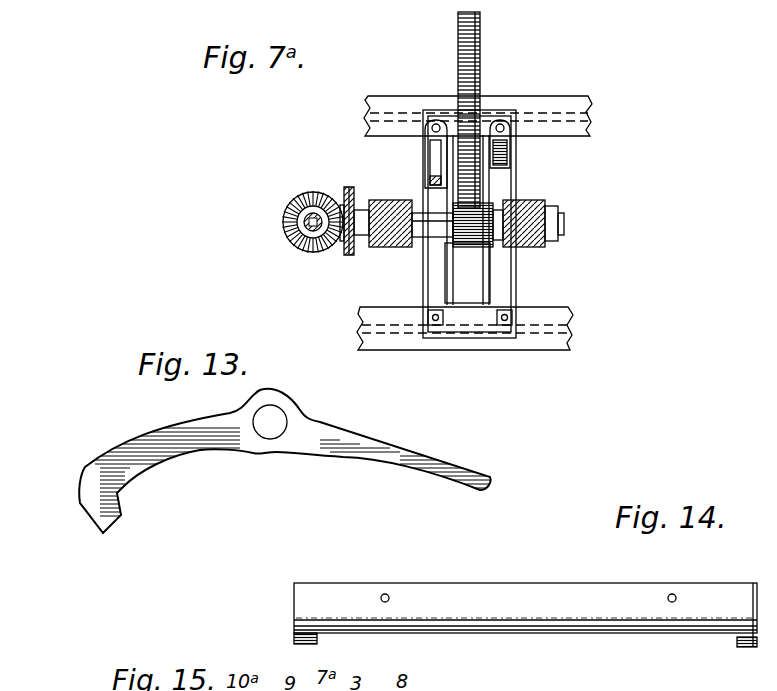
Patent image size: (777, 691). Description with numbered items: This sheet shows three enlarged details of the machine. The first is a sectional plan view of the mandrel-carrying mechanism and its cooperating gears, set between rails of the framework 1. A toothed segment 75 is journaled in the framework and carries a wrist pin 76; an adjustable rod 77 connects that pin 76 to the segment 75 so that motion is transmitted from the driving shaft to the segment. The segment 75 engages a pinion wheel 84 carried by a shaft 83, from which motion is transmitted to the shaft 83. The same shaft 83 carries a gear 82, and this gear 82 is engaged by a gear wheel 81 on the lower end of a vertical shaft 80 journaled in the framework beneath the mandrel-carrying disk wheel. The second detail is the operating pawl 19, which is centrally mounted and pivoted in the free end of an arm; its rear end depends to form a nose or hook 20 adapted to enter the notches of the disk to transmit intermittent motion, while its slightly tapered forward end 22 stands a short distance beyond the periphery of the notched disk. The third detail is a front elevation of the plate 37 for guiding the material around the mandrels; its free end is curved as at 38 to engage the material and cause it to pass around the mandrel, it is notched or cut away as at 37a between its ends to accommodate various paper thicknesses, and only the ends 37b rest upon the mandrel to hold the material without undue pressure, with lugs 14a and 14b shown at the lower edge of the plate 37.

In FIG. 7A, the toothed segment 75 is at (480, 55).
In FIG. 7A, the frame rail 1 is at (572, 104).
In FIG. 7A, the wrist pin 76 is at (425, 135).
In FIG. 7A, the adjustable rod 77 is at (437, 165).
In FIG. 7A, the shaft 83 is at (420, 230).
In FIG. 7A, the pinion wheel 84 is at (482, 245).
In FIG. 7A, the vertical shaft 80 is at (294, 236).
In FIG. 7A, the gear wheel 81 is at (293, 205).
In FIG. 7A, the gear 82 is at (345, 192).
In FIG. 13, the pawl 19 is at (335, 438).
In FIG. 13, the forward end of the pawl 22 is at (460, 472).
In FIG. 13, the nose or hook 20 is at (105, 505).
In FIG. 14, the plate 37 is at (506, 592).
In FIG. 14, the notch or cut-away 37a is at (578, 636).
In FIG. 14, the ends of the plate 37b is at (298, 644).
In FIG. 14, the curved free end 38 is at (660, 634).
In FIG. 14, the bar lug 14a is at (540, 672).
In FIG. 14, the bar lug 14b is at (757, 648).